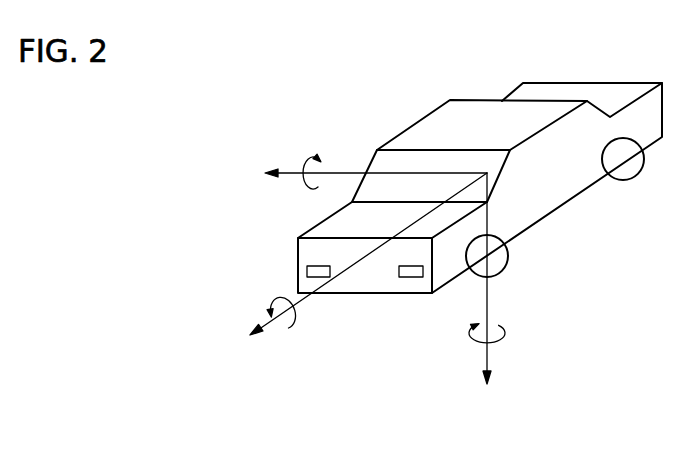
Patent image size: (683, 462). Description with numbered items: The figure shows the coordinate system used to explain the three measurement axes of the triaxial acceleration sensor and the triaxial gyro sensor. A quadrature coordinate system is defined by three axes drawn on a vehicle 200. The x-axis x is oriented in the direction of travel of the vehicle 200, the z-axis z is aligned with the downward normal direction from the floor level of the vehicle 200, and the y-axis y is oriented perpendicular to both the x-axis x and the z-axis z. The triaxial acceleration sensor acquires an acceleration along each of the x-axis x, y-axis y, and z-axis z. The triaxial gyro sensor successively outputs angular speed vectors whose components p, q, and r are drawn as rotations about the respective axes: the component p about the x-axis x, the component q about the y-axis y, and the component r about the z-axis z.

The vehicle 200 is at (614, 441).
The x-axis x is at (358, 264).
The y-axis y is at (367, 171).
The z-axis z is at (486, 293).
The angular speed component p is at (291, 312).
The angular speed component q is at (312, 157).
The angular speed component r is at (478, 336).